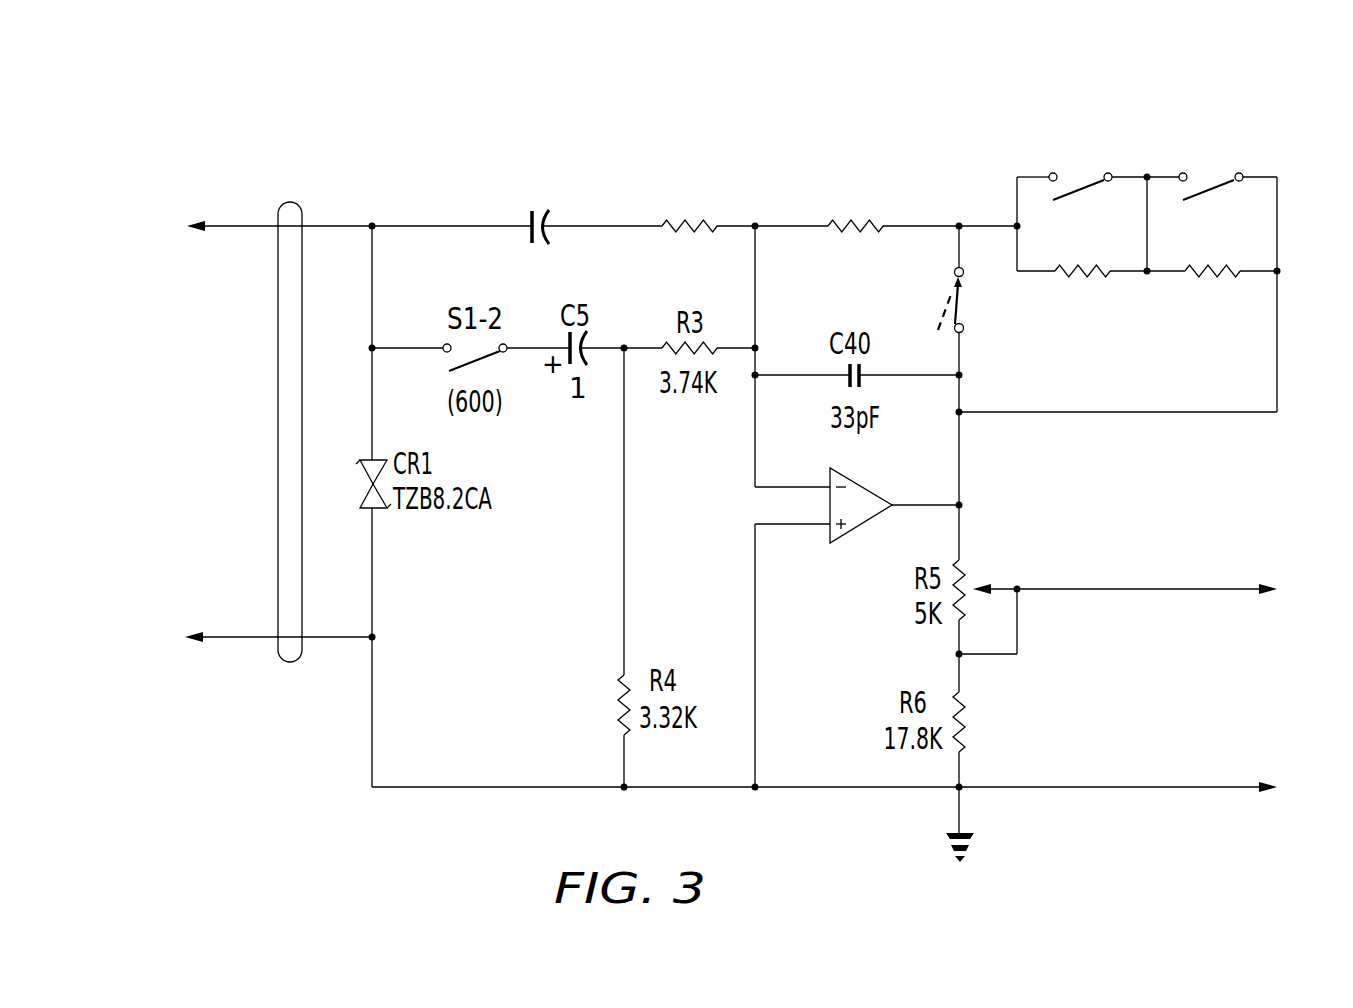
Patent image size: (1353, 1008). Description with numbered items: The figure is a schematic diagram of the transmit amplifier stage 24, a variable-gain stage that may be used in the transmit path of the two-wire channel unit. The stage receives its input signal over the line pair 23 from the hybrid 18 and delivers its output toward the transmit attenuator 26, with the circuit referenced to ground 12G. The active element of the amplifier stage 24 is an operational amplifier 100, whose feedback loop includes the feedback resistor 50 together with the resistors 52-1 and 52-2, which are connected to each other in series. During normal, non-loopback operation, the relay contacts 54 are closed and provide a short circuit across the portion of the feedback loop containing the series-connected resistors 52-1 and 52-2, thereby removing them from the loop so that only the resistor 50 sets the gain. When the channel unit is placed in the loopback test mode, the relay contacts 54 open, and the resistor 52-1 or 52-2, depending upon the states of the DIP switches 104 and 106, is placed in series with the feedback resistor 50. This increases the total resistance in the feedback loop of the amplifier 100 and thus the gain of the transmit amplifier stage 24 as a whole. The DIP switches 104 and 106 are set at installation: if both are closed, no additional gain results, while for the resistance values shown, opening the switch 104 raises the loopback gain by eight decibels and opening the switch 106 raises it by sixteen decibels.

The hybrid 18 is at (244, 431).
The line pair to hybrid 23 is at (294, 201).
The transmit amplifier stage 24 is at (612, 143).
The feedback resistor 50 is at (831, 220).
The operational amplifier 100 is at (828, 470).
The relay contacts 54 is at (983, 333).
The DIP switch 104 is at (1020, 160).
The DIP switch 106 is at (1272, 160).
The resistor 52-1 is at (1077, 277).
The resistor 52-2 is at (1207, 277).
The transmit attenuator 26 is at (850, 484).
The ground 12G is at (960, 869).